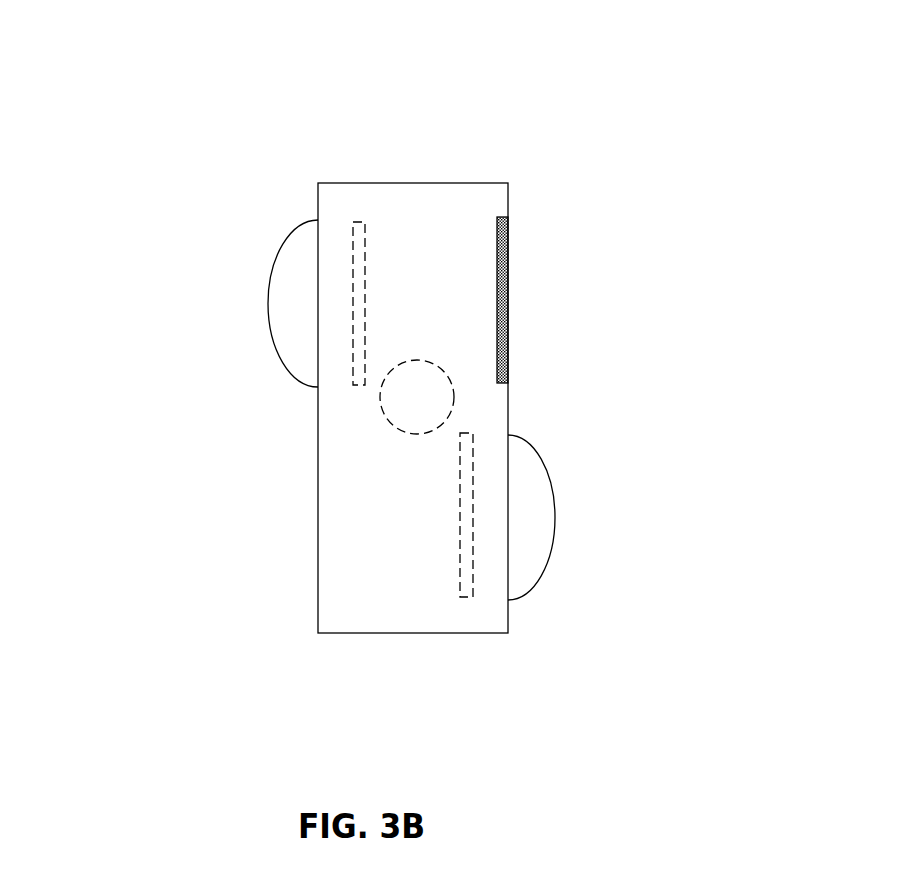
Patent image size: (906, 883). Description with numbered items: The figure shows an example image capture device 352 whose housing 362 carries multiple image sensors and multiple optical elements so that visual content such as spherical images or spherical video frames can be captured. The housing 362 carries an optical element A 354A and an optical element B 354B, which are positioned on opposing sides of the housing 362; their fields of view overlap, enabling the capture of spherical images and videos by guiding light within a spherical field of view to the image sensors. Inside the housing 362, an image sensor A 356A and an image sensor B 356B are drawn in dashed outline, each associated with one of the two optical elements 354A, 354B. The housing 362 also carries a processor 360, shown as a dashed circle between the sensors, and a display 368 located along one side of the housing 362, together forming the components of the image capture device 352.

The image capture device 352 is at (240, 147).
The optical element A 354A is at (288, 358).
The optical element B 354B is at (530, 447).
The image sensor A 356A is at (358, 222).
The image sensor B 356B is at (462, 600).
The processor 360 is at (412, 433).
The housing 362 is at (313, 635).
The display 368 is at (510, 255).